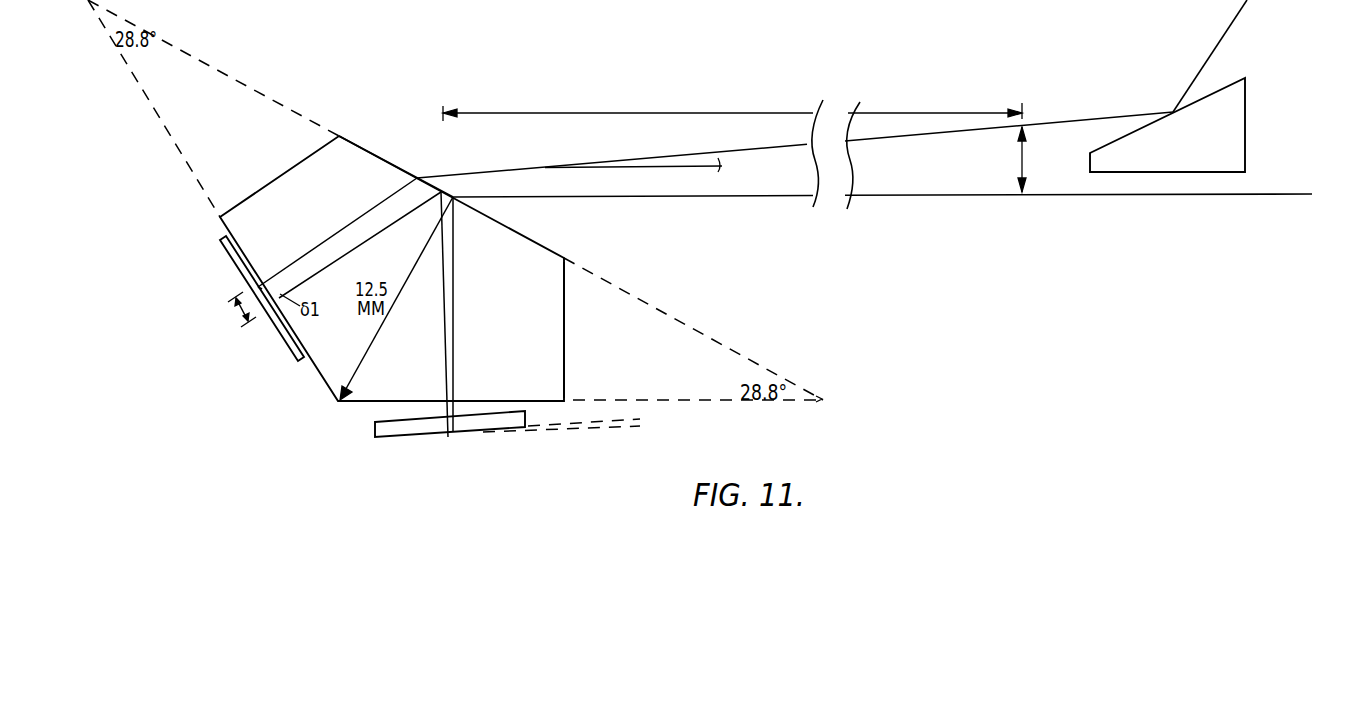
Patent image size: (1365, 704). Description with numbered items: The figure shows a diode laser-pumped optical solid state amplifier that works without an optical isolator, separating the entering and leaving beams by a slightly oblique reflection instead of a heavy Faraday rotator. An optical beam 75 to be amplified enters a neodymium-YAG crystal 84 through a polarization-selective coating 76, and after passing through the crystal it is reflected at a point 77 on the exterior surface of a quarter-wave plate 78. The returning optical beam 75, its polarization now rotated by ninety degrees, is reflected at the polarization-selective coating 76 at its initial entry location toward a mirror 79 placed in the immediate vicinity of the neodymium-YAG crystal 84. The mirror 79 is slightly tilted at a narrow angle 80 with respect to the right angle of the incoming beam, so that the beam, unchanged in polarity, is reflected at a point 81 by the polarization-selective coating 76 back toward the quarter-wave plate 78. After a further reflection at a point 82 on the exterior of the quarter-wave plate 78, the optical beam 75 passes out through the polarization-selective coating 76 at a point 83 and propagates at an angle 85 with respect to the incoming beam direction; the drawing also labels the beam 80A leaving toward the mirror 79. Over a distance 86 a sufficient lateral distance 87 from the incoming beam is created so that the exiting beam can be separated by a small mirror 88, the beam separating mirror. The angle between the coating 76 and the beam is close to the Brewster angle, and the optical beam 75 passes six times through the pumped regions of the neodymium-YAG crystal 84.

The optical beam 75 is at (1150, 194).
The polarization-selective coating 76 is at (520, 234).
The point on the exterior surface of the quarter-wave plate 77 is at (255, 318).
The quarter-wave plate 78 is at (221, 251).
The mirror 79 is at (375, 427).
The narrow angle 80 is at (565, 428).
The beam 80A is at (448, 437).
The point 81 is at (447, 186).
The point 82 is at (262, 289).
The point 83 is at (417, 177).
The neodymium-YAG crystal 84 is at (540, 303).
The angle 85 is at (722, 167).
The distance 86 is at (685, 112).
The lateral distance 87 is at (1022, 178).
The small mirror 88 is at (1218, 93).